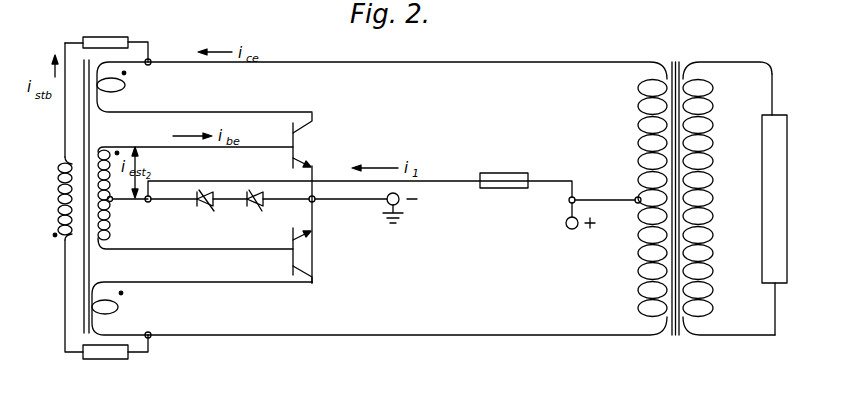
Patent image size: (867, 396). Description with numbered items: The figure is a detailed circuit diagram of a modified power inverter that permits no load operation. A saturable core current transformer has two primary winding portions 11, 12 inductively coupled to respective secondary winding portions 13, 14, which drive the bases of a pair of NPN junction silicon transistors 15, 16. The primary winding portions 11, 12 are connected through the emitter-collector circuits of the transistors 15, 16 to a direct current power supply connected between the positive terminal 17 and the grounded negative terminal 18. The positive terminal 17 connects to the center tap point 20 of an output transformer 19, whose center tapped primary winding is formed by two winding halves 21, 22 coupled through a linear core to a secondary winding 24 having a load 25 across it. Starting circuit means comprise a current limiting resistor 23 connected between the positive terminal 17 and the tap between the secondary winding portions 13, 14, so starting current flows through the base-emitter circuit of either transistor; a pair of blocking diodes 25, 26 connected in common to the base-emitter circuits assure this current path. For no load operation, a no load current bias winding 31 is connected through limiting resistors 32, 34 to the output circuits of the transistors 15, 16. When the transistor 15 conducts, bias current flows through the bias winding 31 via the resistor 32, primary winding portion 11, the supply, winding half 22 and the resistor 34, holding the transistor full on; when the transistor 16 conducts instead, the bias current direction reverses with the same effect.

The primary winding portion 11 is at (125, 82).
The primary winding portion 12 is at (119, 305).
The secondary winding portion 13 is at (107, 151).
The secondary winding portion 14 is at (111, 227).
The NPN junction transistor 15 is at (291, 126).
The NPN junction transistor 16 is at (291, 237).
The positive terminal 17 is at (568, 229).
The grounded negative terminal 18 is at (386, 206).
The output transformer 19 is at (666, 61).
The center tap point 20 is at (635, 198).
The primary winding half 21 is at (637, 124).
The primary winding half 22 is at (638, 256).
The current limiting resistor 23 is at (505, 173).
The secondary winding 24 is at (714, 211).
The blocking diode 25 is at (767, 114).
The blocking diode 26 is at (247, 216).
The no load current bias winding 31 is at (56, 165).
The limiting resistor 32 is at (113, 30).
The limiting resistor 34 is at (118, 359).